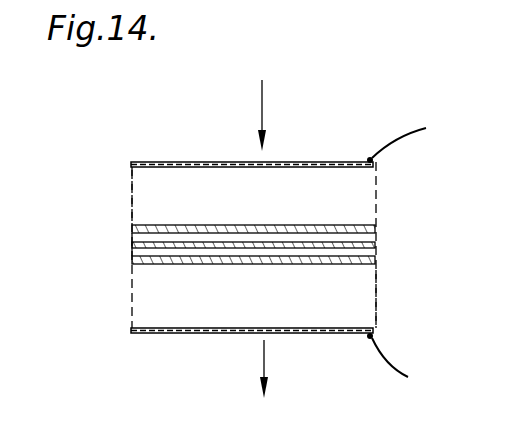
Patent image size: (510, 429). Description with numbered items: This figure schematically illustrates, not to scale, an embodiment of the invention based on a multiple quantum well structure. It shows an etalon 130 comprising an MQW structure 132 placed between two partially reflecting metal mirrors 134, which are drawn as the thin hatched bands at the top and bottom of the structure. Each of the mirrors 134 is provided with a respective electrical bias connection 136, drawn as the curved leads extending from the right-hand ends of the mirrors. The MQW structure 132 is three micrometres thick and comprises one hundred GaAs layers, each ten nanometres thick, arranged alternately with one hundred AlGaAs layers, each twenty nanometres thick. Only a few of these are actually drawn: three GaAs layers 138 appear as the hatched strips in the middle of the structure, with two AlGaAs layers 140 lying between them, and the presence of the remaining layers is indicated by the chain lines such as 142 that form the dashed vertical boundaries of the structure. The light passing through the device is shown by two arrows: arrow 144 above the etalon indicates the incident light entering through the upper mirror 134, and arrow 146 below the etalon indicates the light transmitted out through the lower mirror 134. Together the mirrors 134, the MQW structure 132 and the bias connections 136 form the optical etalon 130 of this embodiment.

The etalon 130 is at (398, 206).
The MQW structure 132 is at (146, 191).
The partially reflecting metal mirrors 134 is at (164, 163).
The electrical bias connections 136 is at (398, 140).
The GaAs layers 138 is at (365, 261).
The AlGaAs layers 140 is at (133, 237).
The chain lines 142 is at (377, 296).
The arrow indicating incident light 144 is at (263, 108).
The arrow indicating transmitted light 146 is at (265, 362).